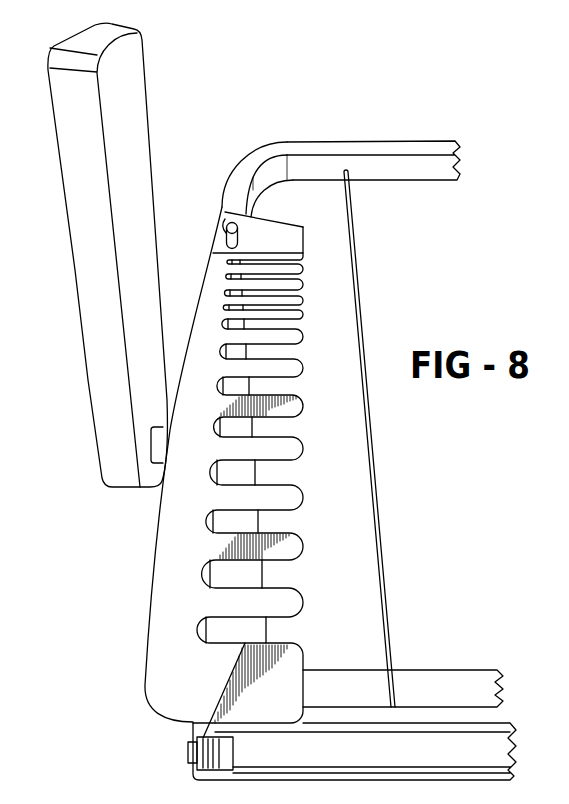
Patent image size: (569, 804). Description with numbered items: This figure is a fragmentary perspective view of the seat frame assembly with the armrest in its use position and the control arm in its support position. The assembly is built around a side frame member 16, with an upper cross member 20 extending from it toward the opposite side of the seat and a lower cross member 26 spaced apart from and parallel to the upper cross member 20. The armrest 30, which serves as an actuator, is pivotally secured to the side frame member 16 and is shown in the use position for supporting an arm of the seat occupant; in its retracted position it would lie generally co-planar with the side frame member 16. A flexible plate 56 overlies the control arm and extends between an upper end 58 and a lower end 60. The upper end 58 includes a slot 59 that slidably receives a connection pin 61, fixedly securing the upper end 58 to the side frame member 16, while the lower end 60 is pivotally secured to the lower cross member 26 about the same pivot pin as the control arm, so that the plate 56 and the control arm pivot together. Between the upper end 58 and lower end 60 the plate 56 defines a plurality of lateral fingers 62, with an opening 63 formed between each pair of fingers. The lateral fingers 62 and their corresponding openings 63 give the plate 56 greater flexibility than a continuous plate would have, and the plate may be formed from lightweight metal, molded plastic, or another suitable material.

The side frame member 16 is at (219, 208).
The upper cross member 20 is at (385, 181).
The lower cross member 26 is at (441, 706).
The armrest 30 is at (134, 87).
The plate 56 is at (158, 553).
The upper end 58 is at (259, 156).
The slot 59 is at (226, 245).
The lower end 60 is at (178, 728).
The connection pin 61 is at (223, 223).
The lateral fingers 62 is at (297, 400).
The opening 63 is at (272, 633).